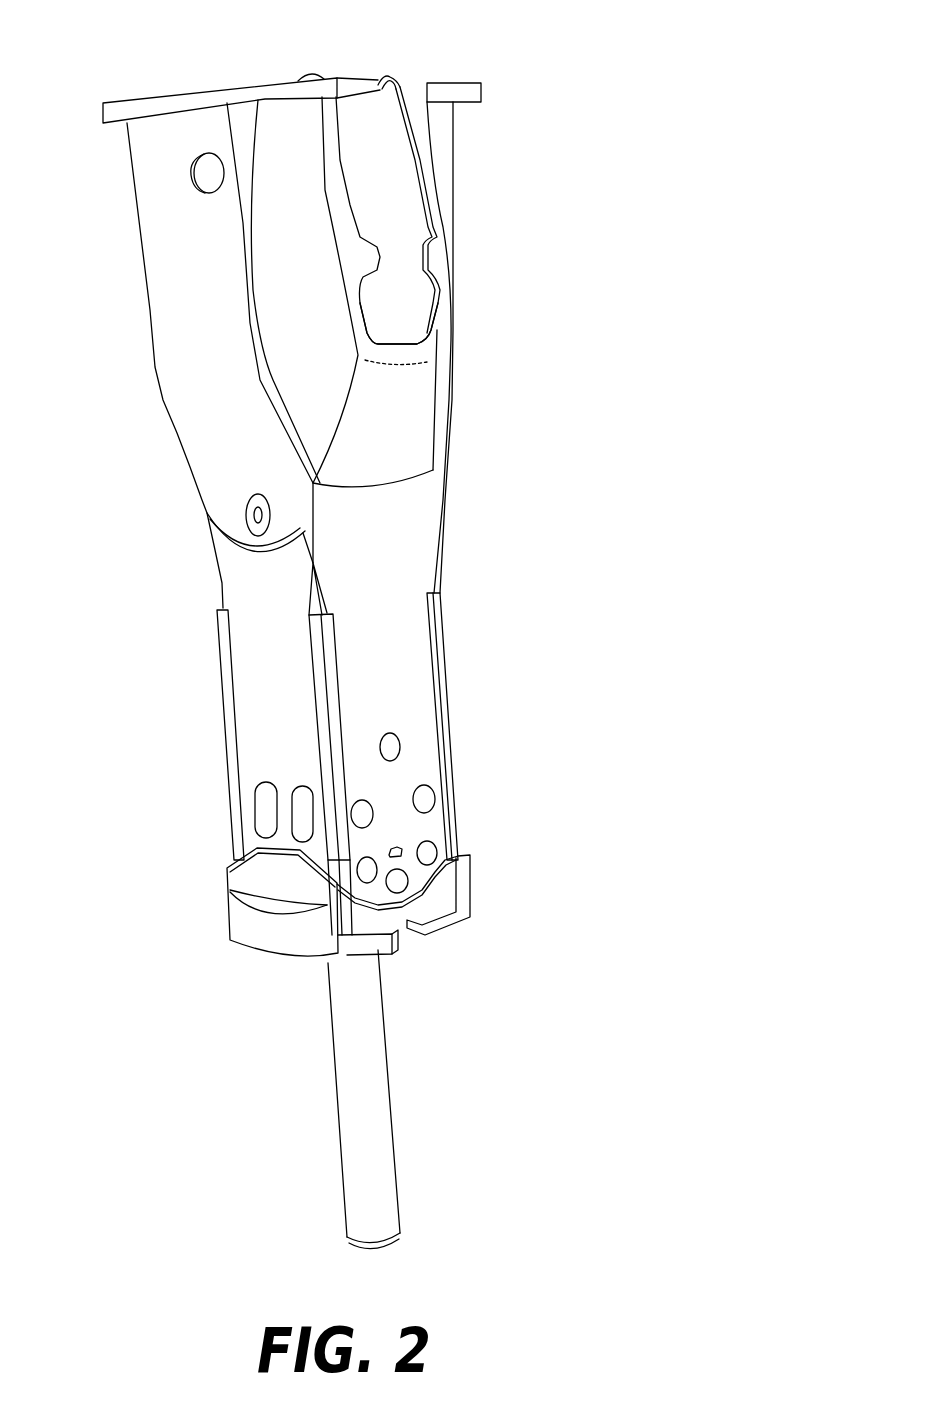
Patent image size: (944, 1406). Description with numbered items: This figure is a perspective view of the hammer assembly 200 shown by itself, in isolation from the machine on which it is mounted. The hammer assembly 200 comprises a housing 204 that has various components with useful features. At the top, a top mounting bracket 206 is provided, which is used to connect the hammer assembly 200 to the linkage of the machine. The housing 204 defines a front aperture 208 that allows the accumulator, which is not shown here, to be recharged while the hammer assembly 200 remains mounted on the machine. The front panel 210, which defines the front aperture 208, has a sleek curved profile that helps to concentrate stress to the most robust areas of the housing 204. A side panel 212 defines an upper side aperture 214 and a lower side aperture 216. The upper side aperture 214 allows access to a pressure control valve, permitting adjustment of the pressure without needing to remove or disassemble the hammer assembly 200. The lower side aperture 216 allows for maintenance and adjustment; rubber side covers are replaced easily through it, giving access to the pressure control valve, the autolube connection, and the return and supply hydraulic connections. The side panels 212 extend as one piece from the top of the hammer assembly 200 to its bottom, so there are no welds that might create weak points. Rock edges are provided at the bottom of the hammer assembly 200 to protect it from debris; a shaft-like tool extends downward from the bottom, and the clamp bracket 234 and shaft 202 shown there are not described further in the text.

The hammer assembly 200 is at (360, 625).
The shaft 202 is at (413, 1099).
The housing 204 is at (462, 235).
The top mounting bracket 206 is at (292, 73).
The front aperture 208 is at (139, 156).
The front panel 210 is at (202, 480).
The side panel 212 is at (416, 516).
The upper side aperture 214 is at (437, 215).
The lower side aperture 216 is at (453, 318).
The clamp bracket 234 is at (383, 918).